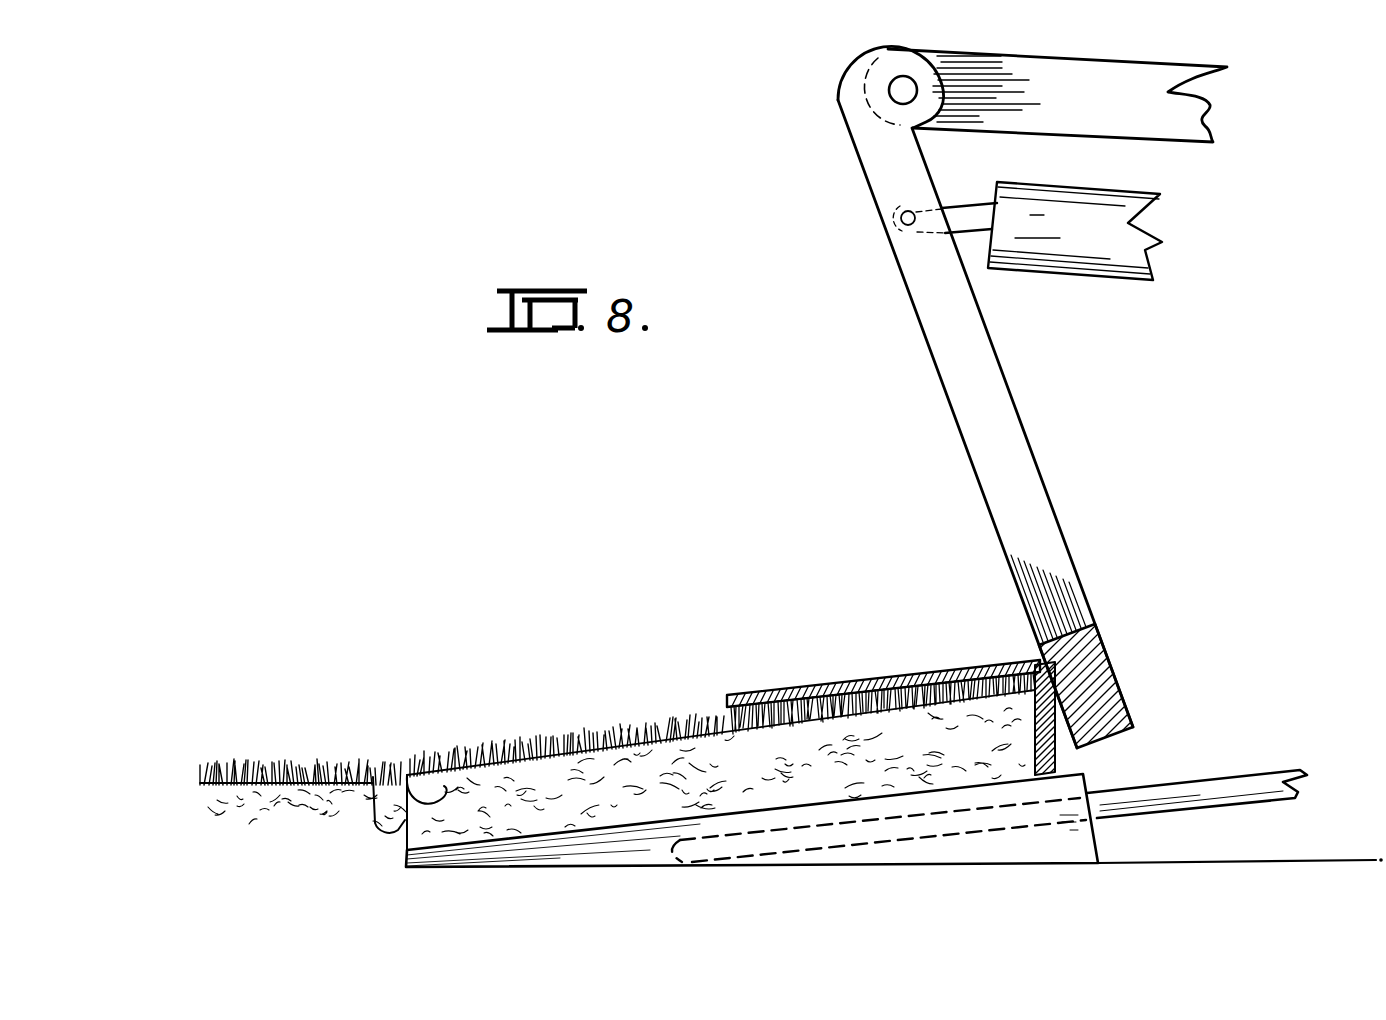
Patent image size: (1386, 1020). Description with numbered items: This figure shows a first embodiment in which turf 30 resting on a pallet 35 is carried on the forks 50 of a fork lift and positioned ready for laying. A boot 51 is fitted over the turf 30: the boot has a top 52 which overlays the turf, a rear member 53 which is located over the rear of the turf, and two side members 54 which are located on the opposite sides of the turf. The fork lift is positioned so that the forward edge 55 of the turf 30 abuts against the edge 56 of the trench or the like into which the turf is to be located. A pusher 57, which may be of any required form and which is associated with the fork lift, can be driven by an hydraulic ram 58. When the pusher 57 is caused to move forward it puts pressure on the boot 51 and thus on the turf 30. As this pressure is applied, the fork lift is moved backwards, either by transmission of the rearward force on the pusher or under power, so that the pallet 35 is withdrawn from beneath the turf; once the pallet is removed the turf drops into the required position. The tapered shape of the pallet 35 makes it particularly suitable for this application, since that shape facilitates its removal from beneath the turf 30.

The turf 30 is at (578, 714).
The pallet 35 is at (992, 846).
The forks 50 is at (1283, 778).
The boot 51 is at (793, 672).
The top 52 is at (848, 685).
The rear member 53 is at (1045, 708).
The side members 54 is at (930, 667).
The forward edge 55 is at (460, 783).
The edge of the trench 56 is at (376, 830).
The pusher 57 is at (988, 418).
The hydraulic ram 58 is at (1157, 261).